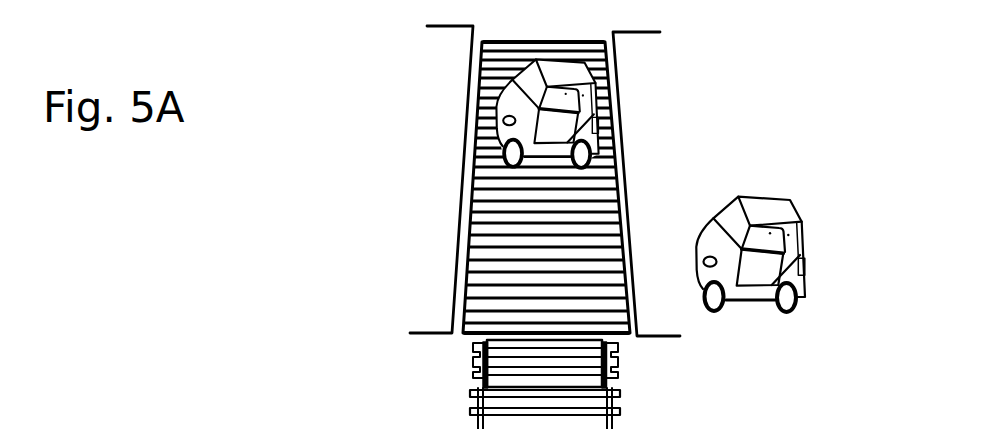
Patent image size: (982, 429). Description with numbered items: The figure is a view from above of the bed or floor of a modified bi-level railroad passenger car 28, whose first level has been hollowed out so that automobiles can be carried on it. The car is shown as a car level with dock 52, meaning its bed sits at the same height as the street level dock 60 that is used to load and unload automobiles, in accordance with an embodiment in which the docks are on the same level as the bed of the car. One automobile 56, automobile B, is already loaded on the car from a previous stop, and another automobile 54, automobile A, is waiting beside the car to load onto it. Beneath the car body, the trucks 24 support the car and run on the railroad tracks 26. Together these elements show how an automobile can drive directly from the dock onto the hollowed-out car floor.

The modified bi-level railroad passenger car 28 is at (558, 28).
The street level dock 60 is at (355, 126).
The car level with dock 52 is at (877, 124).
The automobile B 56 is at (591, 116).
The automobile A 54 is at (780, 255).
The trucks 24 is at (620, 363).
The railroad tracks 26 is at (612, 407).